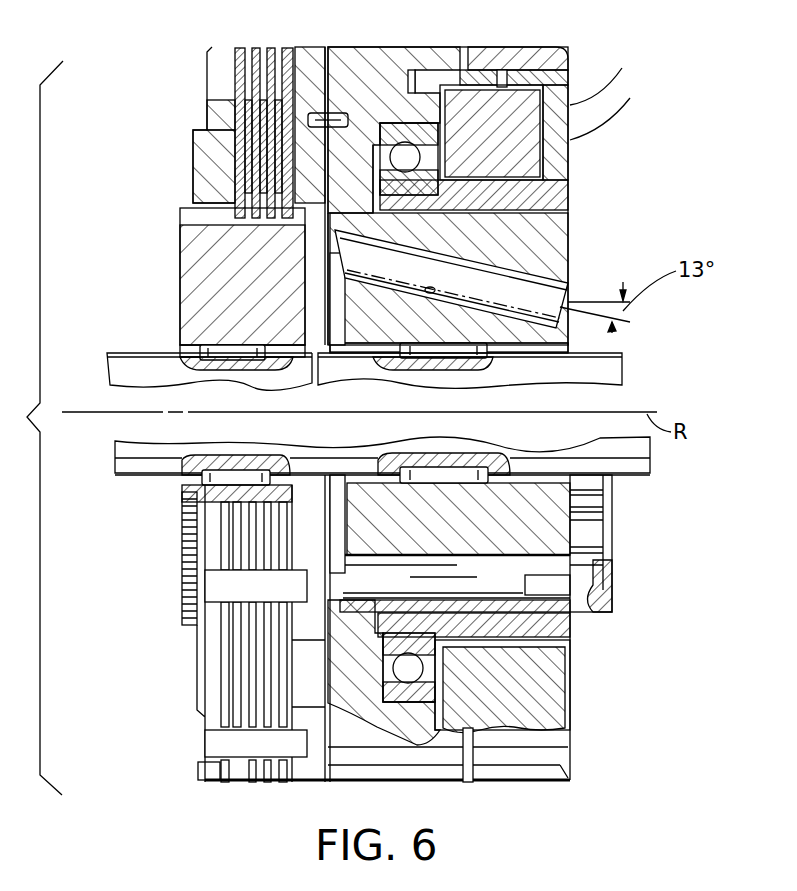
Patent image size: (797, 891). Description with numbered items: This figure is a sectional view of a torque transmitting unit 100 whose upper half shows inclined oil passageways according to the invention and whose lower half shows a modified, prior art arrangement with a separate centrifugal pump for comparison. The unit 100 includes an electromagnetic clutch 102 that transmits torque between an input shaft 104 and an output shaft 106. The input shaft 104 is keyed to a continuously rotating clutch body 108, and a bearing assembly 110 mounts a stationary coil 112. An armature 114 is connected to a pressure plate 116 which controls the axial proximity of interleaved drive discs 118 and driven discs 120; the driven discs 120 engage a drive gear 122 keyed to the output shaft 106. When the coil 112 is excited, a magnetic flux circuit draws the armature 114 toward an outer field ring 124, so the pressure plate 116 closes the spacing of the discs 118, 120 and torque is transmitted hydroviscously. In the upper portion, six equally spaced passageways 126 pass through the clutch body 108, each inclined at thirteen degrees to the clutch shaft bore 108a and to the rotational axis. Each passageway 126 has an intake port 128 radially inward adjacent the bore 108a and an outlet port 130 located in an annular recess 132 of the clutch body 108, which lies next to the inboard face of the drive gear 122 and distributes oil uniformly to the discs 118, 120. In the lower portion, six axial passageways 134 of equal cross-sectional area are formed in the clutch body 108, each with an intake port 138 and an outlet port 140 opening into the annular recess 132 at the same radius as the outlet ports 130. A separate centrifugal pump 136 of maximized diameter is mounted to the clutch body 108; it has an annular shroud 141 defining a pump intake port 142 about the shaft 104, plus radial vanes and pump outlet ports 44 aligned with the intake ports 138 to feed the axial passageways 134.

The torque transmitting unit 100 is at (627, 283).
The electromagnetic clutch 102 is at (420, 770).
The input shaft 104 is at (622, 366).
The output shaft 106 is at (142, 468).
The clutch body 108 is at (553, 246).
The clutch shaft bore 108a is at (540, 360).
The bearing assembly 110 is at (438, 174).
The stationary coil 112 is at (520, 162).
The armature 114 is at (392, 47).
The pressure plate 116 is at (205, 148).
The drive discs 118 is at (290, 48).
The driven discs 120 is at (232, 110).
The drive gear 122 is at (197, 279).
The outer field ring 124 is at (525, 48).
The passageways 126 is at (428, 293).
The intake port 128 is at (573, 321).
The outlet port 130 is at (345, 258).
The annular recess 132 is at (335, 313).
The axial passageways 134 is at (457, 558).
The centrifugal pump 136 is at (622, 597).
The intake port 138 is at (600, 528).
The outlet port 140 is at (345, 567).
The annular shroud 141 is at (612, 581).
The pump intake port 142 is at (600, 558).
The shaft 44 is at (547, 586).